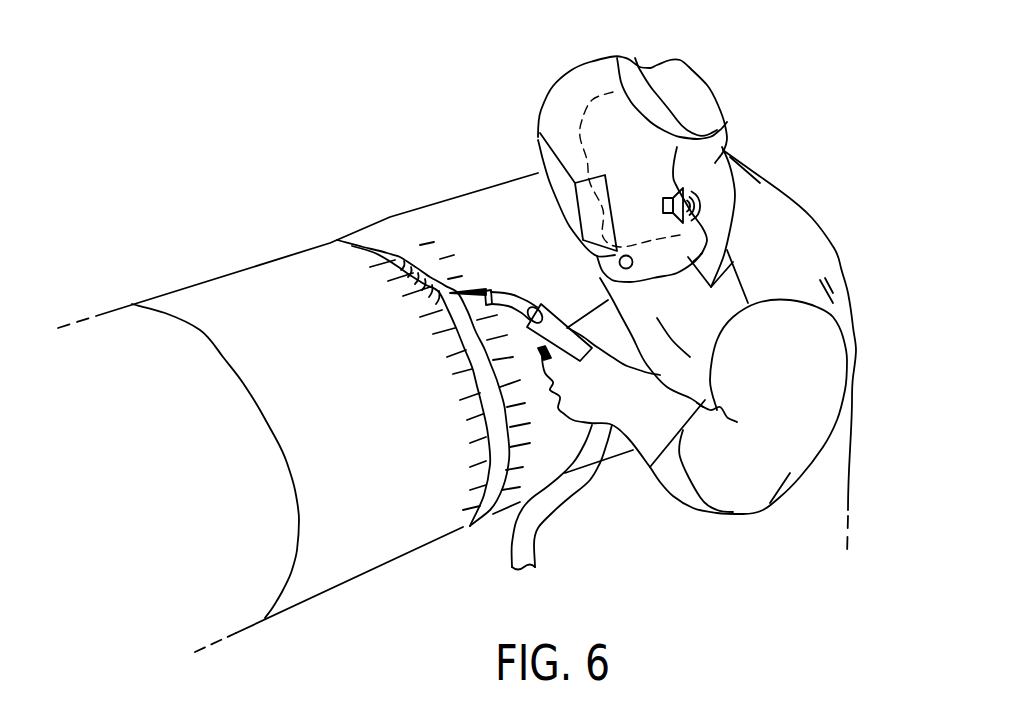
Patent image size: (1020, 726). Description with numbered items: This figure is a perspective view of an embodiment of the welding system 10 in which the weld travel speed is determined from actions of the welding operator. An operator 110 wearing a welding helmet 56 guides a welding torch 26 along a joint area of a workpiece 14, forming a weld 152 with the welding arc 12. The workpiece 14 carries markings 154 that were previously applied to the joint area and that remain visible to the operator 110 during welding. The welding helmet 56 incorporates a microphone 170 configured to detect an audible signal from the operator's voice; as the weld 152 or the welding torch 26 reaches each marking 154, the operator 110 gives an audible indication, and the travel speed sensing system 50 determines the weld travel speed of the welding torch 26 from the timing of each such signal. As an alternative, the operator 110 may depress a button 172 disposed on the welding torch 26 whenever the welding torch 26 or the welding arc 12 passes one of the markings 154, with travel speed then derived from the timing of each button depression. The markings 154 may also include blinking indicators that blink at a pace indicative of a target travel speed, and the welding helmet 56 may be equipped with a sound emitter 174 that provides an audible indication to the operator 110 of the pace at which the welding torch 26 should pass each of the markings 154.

The welding system 10 is at (313, 90).
The welding arc 12 is at (463, 294).
The workpiece 14 is at (388, 540).
The welding torch 26 is at (500, 287).
The travel speed sensing system 50 is at (468, 65).
The welding helmet 56 is at (563, 87).
The operator 110 is at (820, 230).
The weld 152 is at (413, 279).
The markings 154 is at (458, 352).
The microphone 170 is at (632, 262).
The button 172 is at (541, 352).
The sound emitter 174 is at (676, 180).